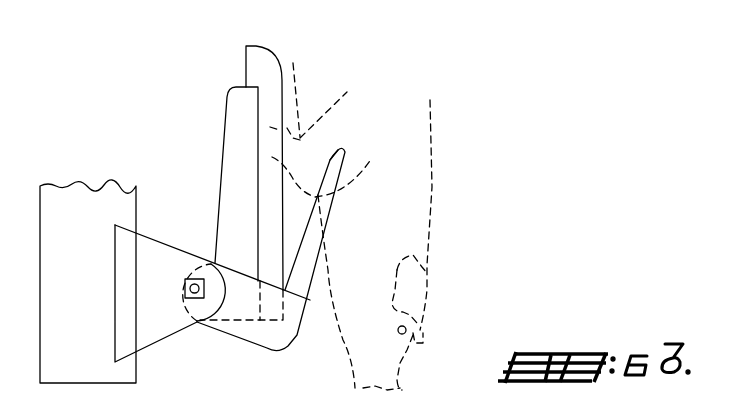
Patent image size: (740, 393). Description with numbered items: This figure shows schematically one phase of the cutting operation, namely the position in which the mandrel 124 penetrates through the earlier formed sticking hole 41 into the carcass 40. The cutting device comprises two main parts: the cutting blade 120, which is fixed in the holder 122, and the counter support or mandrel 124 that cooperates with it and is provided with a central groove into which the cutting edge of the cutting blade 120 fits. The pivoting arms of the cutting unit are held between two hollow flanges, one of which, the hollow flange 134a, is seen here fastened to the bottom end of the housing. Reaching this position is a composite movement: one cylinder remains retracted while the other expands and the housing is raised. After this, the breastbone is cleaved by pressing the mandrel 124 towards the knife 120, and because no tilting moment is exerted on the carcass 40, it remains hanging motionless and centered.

The cutting blade 120 is at (261, 61).
The holder 122 is at (236, 129).
The counter support 124 is at (328, 199).
The hollow flange 134a is at (155, 332).
The carcass 40 is at (423, 198).
The sticking hole 41 is at (328, 235).